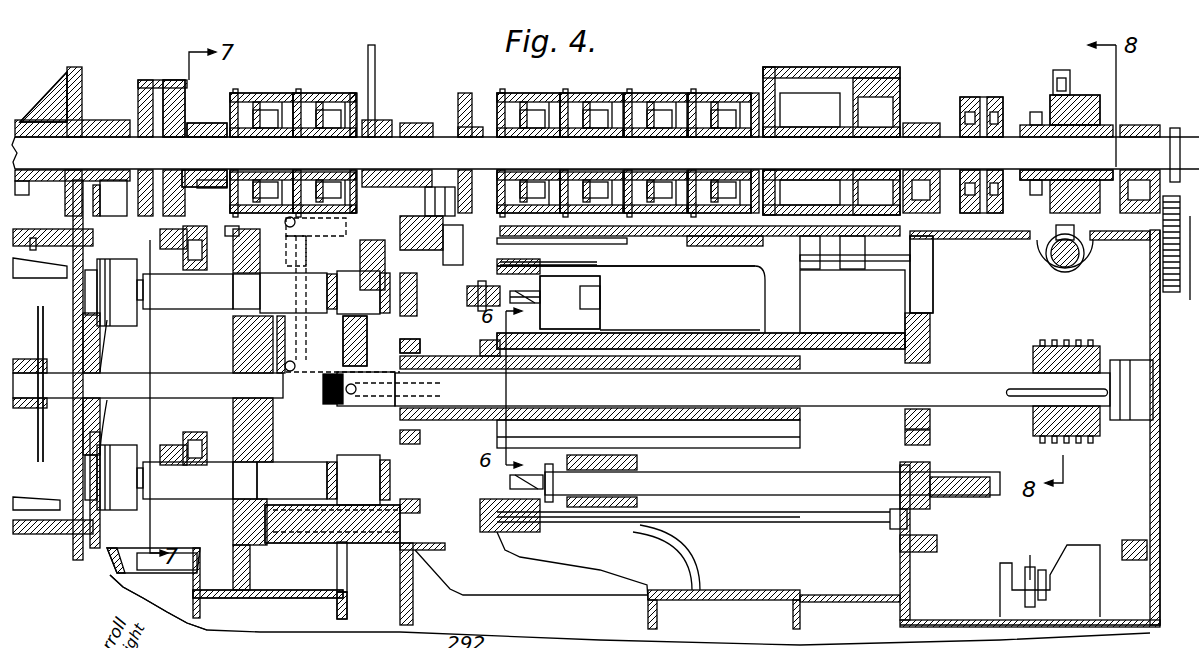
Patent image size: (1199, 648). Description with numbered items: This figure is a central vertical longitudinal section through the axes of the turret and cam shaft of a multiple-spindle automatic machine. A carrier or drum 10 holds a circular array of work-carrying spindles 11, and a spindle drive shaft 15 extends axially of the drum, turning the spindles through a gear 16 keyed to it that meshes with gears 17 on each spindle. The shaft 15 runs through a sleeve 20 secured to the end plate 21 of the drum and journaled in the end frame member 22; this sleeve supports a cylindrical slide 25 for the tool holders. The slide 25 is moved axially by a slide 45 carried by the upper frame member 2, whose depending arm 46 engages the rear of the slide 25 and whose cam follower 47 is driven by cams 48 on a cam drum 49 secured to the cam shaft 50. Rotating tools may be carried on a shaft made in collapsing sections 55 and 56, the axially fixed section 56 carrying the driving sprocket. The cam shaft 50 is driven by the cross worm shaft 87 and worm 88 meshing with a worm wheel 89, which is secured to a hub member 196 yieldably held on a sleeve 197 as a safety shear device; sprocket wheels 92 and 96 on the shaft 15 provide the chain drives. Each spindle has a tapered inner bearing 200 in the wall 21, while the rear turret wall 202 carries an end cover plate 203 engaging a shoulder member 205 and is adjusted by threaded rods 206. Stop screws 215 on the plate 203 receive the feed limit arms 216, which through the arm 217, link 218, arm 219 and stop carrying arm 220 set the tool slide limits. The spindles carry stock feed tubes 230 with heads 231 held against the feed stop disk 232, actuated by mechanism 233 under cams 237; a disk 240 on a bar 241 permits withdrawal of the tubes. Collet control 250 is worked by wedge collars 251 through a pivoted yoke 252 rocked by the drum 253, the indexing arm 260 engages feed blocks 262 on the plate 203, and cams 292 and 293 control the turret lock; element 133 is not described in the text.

The upper frame member 2 is at (930, 232).
The carrier or drum 10 is at (355, 570).
The work-carrying spindles 11 is at (248, 383).
The spindle drive shaft 15 is at (948, 383).
The gear 16 is at (340, 342).
The gears 17 is at (337, 460).
The sleeve 20 is at (840, 360).
The end plate 21 is at (425, 437).
The end frame member 22 is at (928, 342).
The cylindrical slide 25 is at (800, 350).
The slide 45 is at (735, 265).
The depending arm 46 is at (770, 303).
The cam follower 47 is at (812, 245).
The cams 48 is at (858, 242).
The cam drum 49 is at (855, 83).
The cam shaft 50 is at (605, 153).
The collapsing section 55 is at (772, 484).
The axially fixed section 56 is at (842, 478).
The cross worm shaft 87 is at (1046, 266).
The worm 88 is at (1084, 268).
The worm wheel 89 is at (1052, 72).
The sprocket wheel 92 is at (1047, 348).
The sprocket wheel 96 is at (1045, 449).
The clutch 133 is at (965, 97).
The hub member 196 is at (1047, 120).
The sleeve 197 is at (1030, 185).
The inner bearing 200 is at (420, 338).
The turret wall 202 is at (292, 480).
The end cover plate 203 is at (268, 584).
The shoulder member 205 is at (236, 289).
The threaded rods 206 is at (315, 254).
The adjustable stop screws 215 is at (225, 232).
The feed limit arms 216 is at (232, 226).
The arm 217 is at (297, 293).
The link 218 is at (343, 372).
The arm 219 is at (320, 405).
The stop carrying arm 220 is at (400, 388).
The stock feed tubes 230 is at (100, 420).
The heads 231 is at (67, 290).
The feed stop disk 232 is at (95, 358).
The actuating mechanism 233 is at (40, 230).
The cams 237 is at (67, 95).
The disk 240 is at (43, 430).
The bar 241 is at (148, 386).
The collet-controlling mechanism 250 is at (135, 505).
The slidable wedge collars 251 is at (165, 262).
The actuating pivoted yoke 252 is at (186, 180).
The drum 253 is at (166, 85).
The indexing arm 260 is at (205, 182).
The feed blocks 262 is at (158, 602).
The cams 292 is at (388, 118).
The cams 293 is at (367, 75).